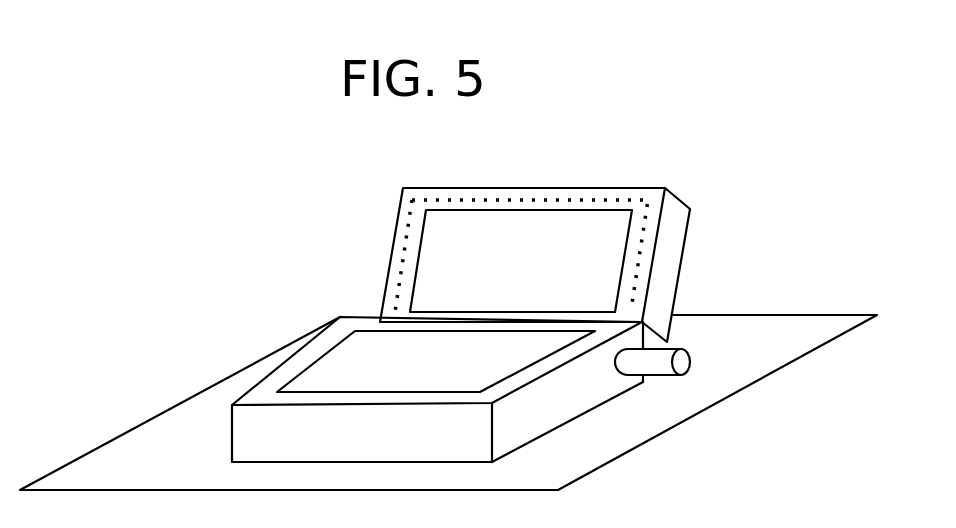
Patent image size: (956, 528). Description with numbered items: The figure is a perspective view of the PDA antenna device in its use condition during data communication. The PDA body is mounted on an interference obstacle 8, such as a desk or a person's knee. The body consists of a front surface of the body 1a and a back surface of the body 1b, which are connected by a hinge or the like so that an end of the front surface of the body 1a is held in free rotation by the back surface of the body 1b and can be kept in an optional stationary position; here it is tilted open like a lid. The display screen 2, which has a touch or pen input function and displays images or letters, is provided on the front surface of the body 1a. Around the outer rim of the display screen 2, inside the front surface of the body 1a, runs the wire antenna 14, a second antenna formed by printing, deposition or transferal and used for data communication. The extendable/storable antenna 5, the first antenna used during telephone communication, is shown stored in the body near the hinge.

The wire antenna 14 is at (467, 197).
The display screen 2 is at (372, 347).
The front surface of the body 1a is at (677, 253).
The back surface of the body 1b is at (297, 368).
The interference obstacle 8 is at (768, 338).
The extendable/storable antenna 5 is at (672, 372).